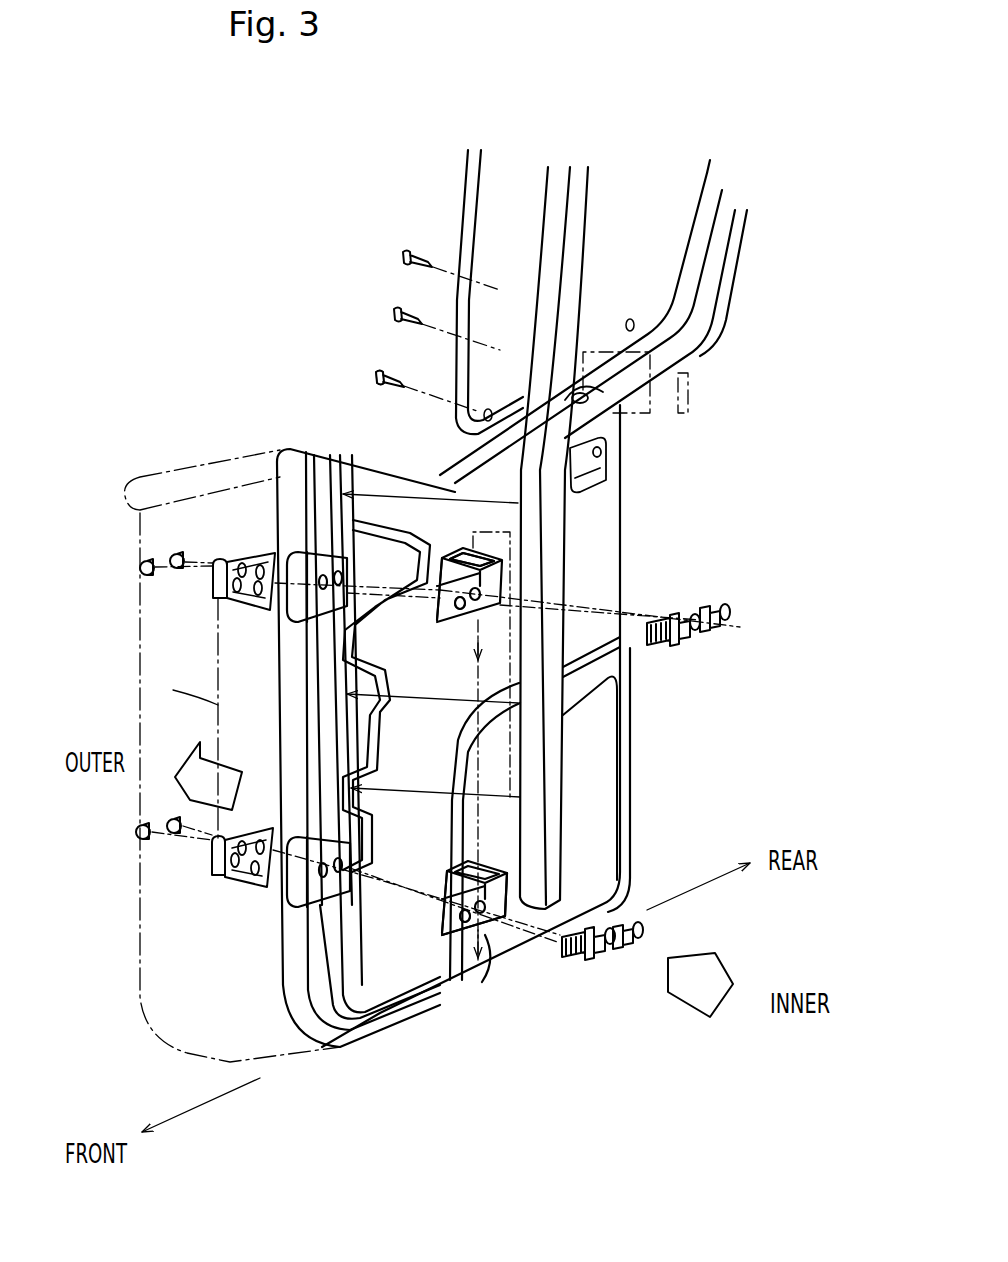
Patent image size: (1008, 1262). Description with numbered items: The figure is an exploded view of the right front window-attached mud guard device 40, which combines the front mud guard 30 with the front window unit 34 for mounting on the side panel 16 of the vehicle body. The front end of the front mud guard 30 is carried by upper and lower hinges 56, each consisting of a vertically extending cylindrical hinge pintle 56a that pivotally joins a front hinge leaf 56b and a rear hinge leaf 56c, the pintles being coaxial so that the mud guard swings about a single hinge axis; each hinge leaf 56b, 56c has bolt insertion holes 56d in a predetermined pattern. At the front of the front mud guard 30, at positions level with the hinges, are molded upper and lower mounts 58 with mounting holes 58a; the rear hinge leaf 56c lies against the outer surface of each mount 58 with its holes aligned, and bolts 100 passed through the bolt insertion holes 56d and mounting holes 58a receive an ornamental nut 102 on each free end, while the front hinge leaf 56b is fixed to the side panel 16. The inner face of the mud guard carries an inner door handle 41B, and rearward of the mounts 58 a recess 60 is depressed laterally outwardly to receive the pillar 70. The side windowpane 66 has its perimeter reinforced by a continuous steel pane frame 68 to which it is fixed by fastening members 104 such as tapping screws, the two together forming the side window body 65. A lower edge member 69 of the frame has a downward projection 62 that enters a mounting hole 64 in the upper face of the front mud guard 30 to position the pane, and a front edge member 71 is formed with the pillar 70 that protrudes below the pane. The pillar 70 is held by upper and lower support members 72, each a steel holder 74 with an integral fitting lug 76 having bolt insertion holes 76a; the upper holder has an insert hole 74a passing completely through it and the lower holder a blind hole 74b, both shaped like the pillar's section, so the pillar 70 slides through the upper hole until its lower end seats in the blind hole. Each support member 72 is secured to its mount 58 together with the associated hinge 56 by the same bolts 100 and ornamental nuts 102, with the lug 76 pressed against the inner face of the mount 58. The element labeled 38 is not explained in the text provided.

The side panel 16 is at (208, 464).
The front mud guard 30 is at (276, 440).
The front window unit 34 is at (397, 350).
The inner panel recess 38 is at (598, 724).
The window-attached mud guard device 40 is at (235, 316).
The inner door handle 41B is at (590, 483).
The hinge 56 is at (212, 592).
The hinge pintle 56a is at (220, 600).
The front hinge leaf 56b is at (245, 604).
The rear hinge leaf 56c is at (272, 553).
The bolt insertion hole 56d is at (244, 568).
The mount 58 is at (335, 556).
The mounting hole 58a is at (300, 548).
The recess 60 is at (342, 548).
The projection 62 is at (690, 393).
The mounting hole 64 is at (603, 392).
The side window body 65 is at (803, 190).
The side windowpane 66 is at (665, 224).
The pane frame 68 is at (724, 257).
The lower edge member 69 is at (693, 360).
The pillar 70 is at (556, 768).
The front edge member 71 is at (553, 210).
The support member 72 is at (518, 556).
The holder 74 is at (492, 585).
The insert hole 74a is at (462, 548).
The blind hole 74b is at (485, 928).
The fitting lug 76 is at (450, 556).
The bolt insertion hole 76a is at (459, 608).
The bolt 100 is at (725, 622).
The ornamental nut 102 is at (140, 566).
The fastening member 104 is at (400, 378).